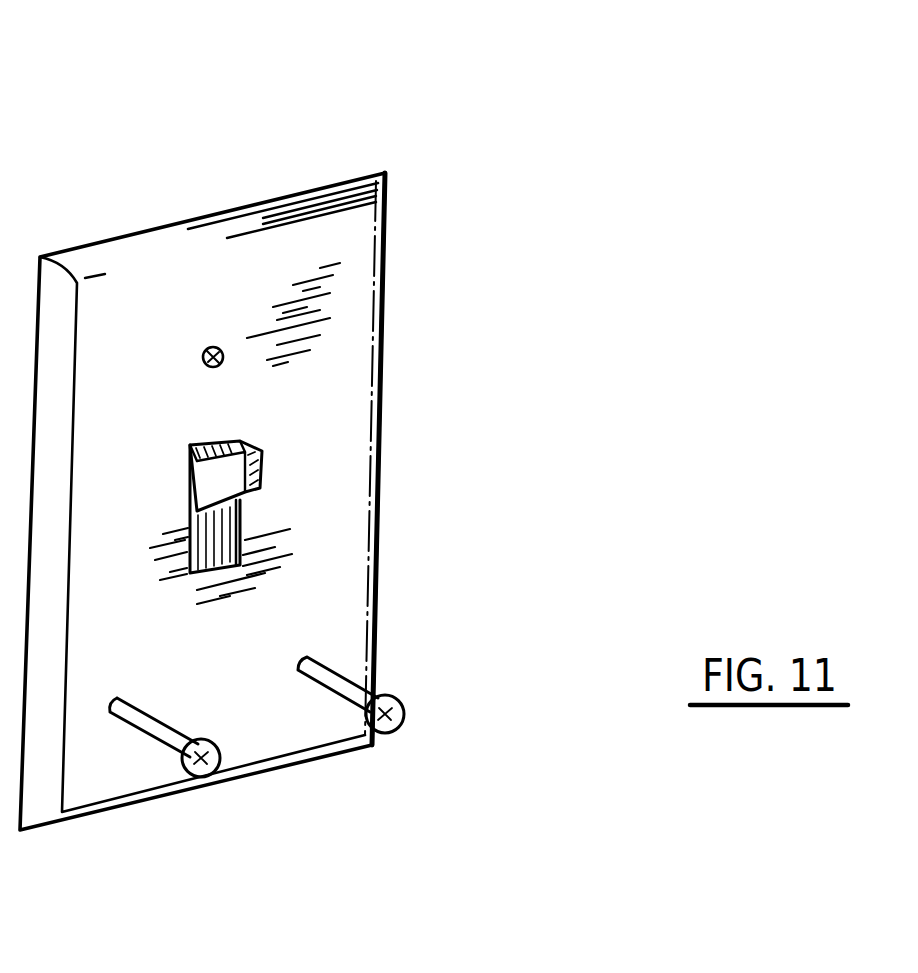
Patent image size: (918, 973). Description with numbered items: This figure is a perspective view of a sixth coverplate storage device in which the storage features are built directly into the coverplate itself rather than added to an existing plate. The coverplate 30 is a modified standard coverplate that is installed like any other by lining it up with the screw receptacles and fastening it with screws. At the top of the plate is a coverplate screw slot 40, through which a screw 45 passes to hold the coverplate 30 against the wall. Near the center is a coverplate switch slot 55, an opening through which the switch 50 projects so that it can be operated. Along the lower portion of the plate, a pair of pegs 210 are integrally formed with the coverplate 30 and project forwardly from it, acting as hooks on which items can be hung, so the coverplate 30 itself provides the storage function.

The coverplate 30 is at (360, 308).
The coverplate screw slot 40 is at (218, 348).
The screw 45 is at (203, 363).
The switch 50 is at (267, 453).
The coverplate switch slot 55 is at (240, 510).
The pegs 210 is at (350, 737).